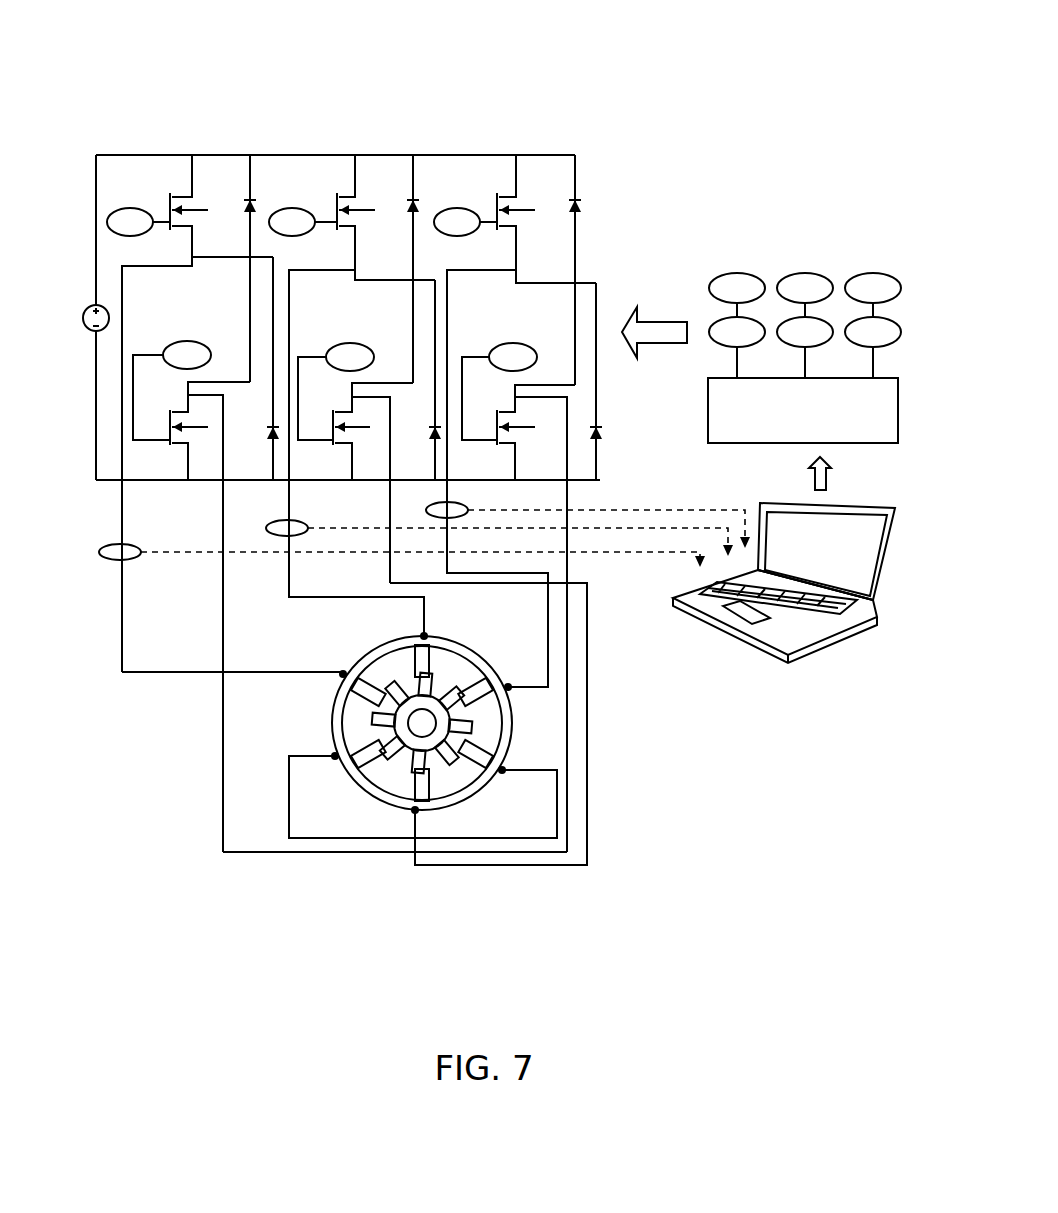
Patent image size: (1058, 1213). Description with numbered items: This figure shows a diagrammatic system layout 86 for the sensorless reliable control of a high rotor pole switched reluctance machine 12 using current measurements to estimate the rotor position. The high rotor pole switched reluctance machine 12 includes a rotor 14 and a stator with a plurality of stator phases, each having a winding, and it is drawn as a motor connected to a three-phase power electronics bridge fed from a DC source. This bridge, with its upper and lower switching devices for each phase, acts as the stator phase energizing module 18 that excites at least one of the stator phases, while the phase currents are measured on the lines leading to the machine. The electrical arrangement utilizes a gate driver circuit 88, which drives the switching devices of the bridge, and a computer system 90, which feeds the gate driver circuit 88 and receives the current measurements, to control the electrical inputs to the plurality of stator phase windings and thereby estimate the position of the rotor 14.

The diagrammatic system layout 86 is at (515, 72).
The gate driver circuit 88 is at (898, 415).
The computer system 90 is at (890, 560).
The high rotor pole switched reluctance machine 12 is at (519, 725).
The rotor 14 is at (440, 785).
The stator phase energizing module 18 is at (385, 762).